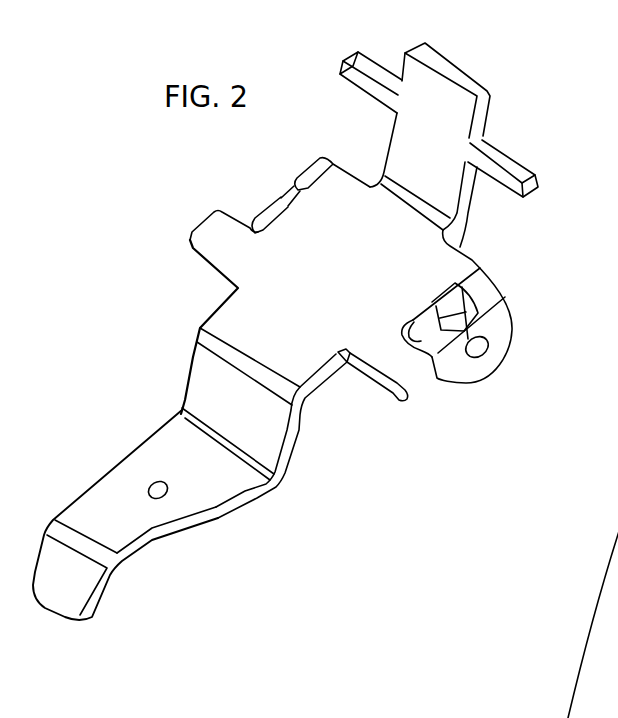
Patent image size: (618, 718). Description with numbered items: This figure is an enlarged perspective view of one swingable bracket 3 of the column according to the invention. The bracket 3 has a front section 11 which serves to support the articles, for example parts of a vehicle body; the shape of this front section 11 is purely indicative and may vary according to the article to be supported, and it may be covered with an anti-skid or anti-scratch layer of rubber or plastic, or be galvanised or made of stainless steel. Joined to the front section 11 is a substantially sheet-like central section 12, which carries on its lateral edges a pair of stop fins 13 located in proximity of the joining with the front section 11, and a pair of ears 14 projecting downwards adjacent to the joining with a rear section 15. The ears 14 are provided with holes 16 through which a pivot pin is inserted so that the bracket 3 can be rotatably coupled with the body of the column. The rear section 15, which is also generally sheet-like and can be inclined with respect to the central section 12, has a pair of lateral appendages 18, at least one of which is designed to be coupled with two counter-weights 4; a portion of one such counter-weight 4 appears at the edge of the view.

The bracket 3 is at (146, 282).
The counter-weight 4 is at (556, 652).
The front section 11 is at (158, 452).
The central section 12 is at (313, 311).
The stop fins 13 is at (212, 230).
The ears 14 is at (505, 318).
The rear section 15 is at (448, 93).
The holes 16 is at (472, 340).
The lateral appendages 18 is at (348, 58).